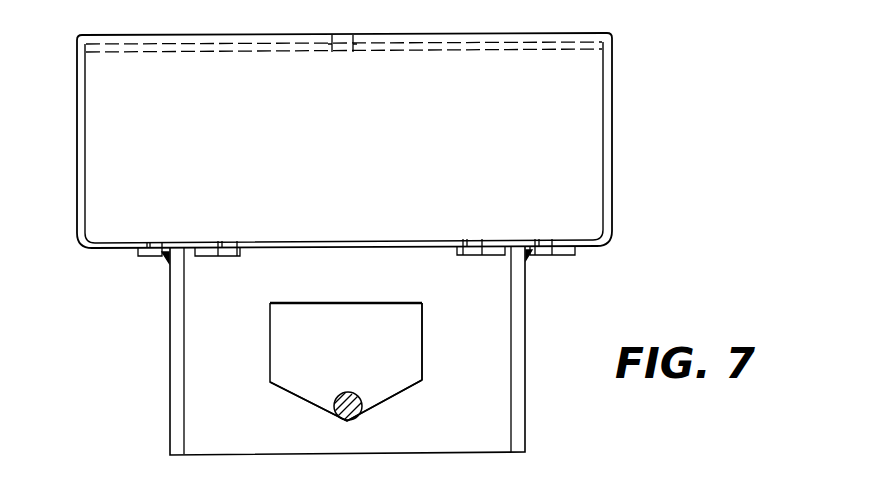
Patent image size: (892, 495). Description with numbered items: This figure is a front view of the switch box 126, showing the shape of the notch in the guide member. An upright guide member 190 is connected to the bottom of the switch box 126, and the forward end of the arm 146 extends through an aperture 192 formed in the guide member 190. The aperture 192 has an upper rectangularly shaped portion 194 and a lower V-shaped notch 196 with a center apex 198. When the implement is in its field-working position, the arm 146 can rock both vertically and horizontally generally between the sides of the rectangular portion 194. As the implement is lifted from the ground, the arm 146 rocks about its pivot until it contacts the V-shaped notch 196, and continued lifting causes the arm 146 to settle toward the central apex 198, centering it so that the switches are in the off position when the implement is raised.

The switch box 126 is at (612, 101).
The upright guide member 190 is at (176, 376).
The aperture 192 is at (350, 313).
The upper rectangularly shaped portion 194 is at (420, 335).
The lower V-shaped notch 196 is at (403, 390).
The center apex 198 is at (346, 422).
The arm 146 is at (358, 393).